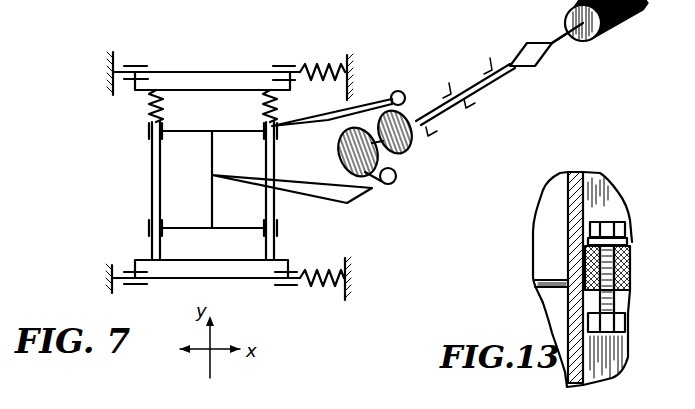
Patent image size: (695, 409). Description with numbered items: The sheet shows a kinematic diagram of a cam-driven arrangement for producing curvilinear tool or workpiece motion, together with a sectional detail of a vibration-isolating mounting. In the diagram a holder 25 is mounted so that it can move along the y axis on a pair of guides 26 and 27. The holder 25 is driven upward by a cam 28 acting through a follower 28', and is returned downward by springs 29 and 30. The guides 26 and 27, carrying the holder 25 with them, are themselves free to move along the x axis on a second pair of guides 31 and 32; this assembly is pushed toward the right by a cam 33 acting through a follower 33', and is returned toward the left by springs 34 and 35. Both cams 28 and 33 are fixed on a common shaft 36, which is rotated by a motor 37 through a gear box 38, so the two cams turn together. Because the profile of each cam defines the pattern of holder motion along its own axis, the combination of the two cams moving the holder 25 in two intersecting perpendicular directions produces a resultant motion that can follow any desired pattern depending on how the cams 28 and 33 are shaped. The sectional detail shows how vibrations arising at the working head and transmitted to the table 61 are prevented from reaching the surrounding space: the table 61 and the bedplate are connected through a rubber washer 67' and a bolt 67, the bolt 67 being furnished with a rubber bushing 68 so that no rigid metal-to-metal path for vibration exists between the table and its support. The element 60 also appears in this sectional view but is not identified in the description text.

In FIG. 7, the holder 25 is at (212, 132).
In FIG. 7, the guide 26 is at (156, 259).
In FIG. 7, the guide 27 is at (272, 252).
In FIG. 7, the cam 28 is at (433, 163).
In FIG. 7, the follower 28' is at (419, 83).
In FIG. 7, the spring 29 is at (150, 119).
In FIG. 7, the spring 30 is at (278, 118).
In FIG. 7, the guide 31 is at (200, 72).
In FIG. 7, the guide 32 is at (236, 280).
In FIG. 7, the cam 33 is at (316, 205).
In FIG. 7, the follower 33' is at (408, 202).
In FIG. 7, the spring 34 is at (318, 66).
In FIG. 7, the spring 35 is at (328, 292).
In FIG. 7, the shaft 36 is at (456, 90).
In FIG. 7, the motor 37 is at (620, 36).
In FIG. 7, the gear box 38 is at (533, 67).
In FIG. 13, the housing body 60 is at (546, 314).
In FIG. 13, the table 61 is at (568, 217).
In FIG. 13, the bolt 67 is at (625, 312).
In FIG. 13, the rubber washer 67' is at (628, 264).
In FIG. 13, the rubber bushing 68 is at (632, 242).